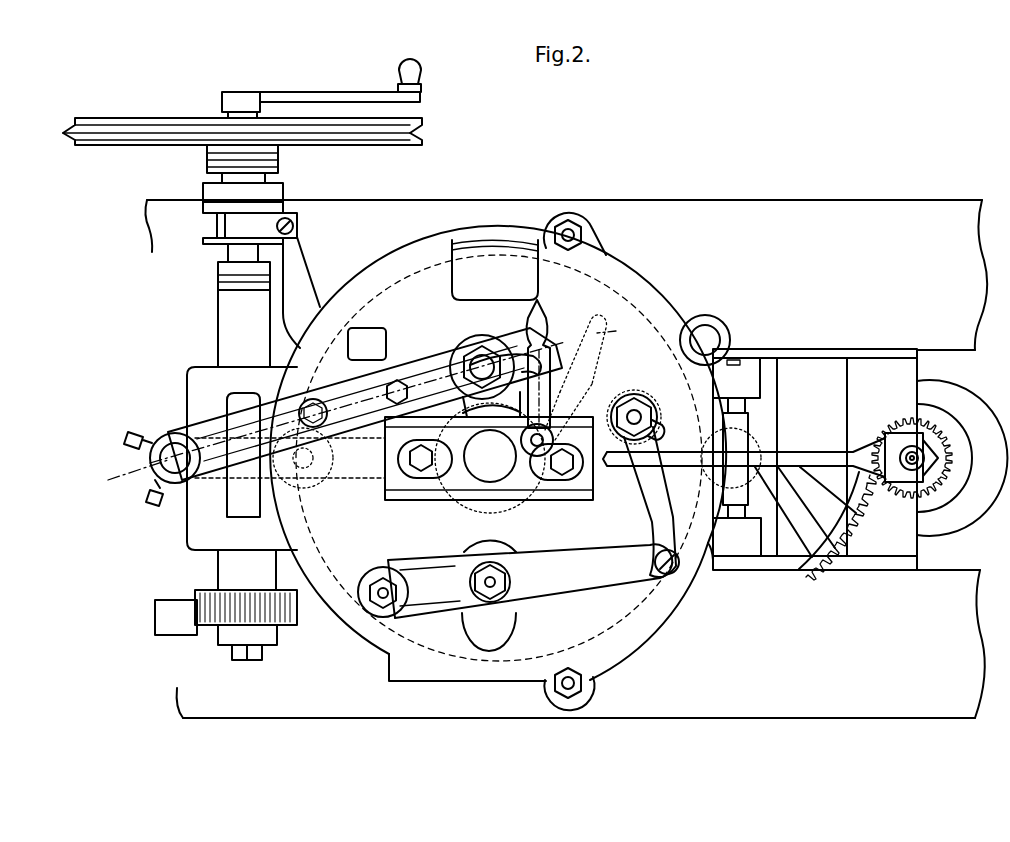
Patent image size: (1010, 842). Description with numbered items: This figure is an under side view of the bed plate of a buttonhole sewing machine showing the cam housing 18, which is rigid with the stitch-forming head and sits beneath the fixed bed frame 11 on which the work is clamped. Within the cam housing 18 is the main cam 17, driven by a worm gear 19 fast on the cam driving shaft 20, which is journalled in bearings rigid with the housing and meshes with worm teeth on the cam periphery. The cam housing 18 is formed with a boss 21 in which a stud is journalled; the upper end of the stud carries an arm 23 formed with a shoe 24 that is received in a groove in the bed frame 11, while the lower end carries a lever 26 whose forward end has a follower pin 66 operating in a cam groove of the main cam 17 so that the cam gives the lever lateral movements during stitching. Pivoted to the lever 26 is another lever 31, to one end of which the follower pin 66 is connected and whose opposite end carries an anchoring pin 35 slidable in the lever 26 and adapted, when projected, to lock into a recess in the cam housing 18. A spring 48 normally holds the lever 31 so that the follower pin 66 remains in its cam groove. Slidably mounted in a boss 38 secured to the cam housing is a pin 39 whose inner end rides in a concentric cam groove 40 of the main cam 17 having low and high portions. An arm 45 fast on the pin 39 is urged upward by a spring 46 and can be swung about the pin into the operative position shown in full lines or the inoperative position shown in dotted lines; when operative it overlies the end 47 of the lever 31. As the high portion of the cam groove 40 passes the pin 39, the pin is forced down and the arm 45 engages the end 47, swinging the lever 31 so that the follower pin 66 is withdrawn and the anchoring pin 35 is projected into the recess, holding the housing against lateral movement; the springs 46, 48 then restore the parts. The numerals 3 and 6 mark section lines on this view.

The pivot pin / section line 3- 3 is at (360, 411).
The section line 6-6 lug bolts 6 is at (538, 252).
The bed frame 11 is at (720, 212).
The main cam 17 is at (487, 257).
The cam housing 18 is at (402, 277).
The worm gear 19 is at (222, 497).
The cam driving shaft 20 is at (233, 250).
The boss 21 is at (190, 385).
The arm 23 is at (296, 497).
The shoe 24 is at (348, 480).
The lever 26 is at (341, 392).
The lever 31 is at (416, 383).
The anchoring pin 35 is at (306, 404).
The boss 38 is at (575, 462).
The pin or stud 39 is at (545, 456).
The cam groove 40 is at (502, 408).
The arm 45 is at (542, 348).
The spring 46 is at (562, 440).
The end of the lever 47 is at (547, 355).
The spring 48 is at (516, 350).
The follower pin 66 is at (478, 355).